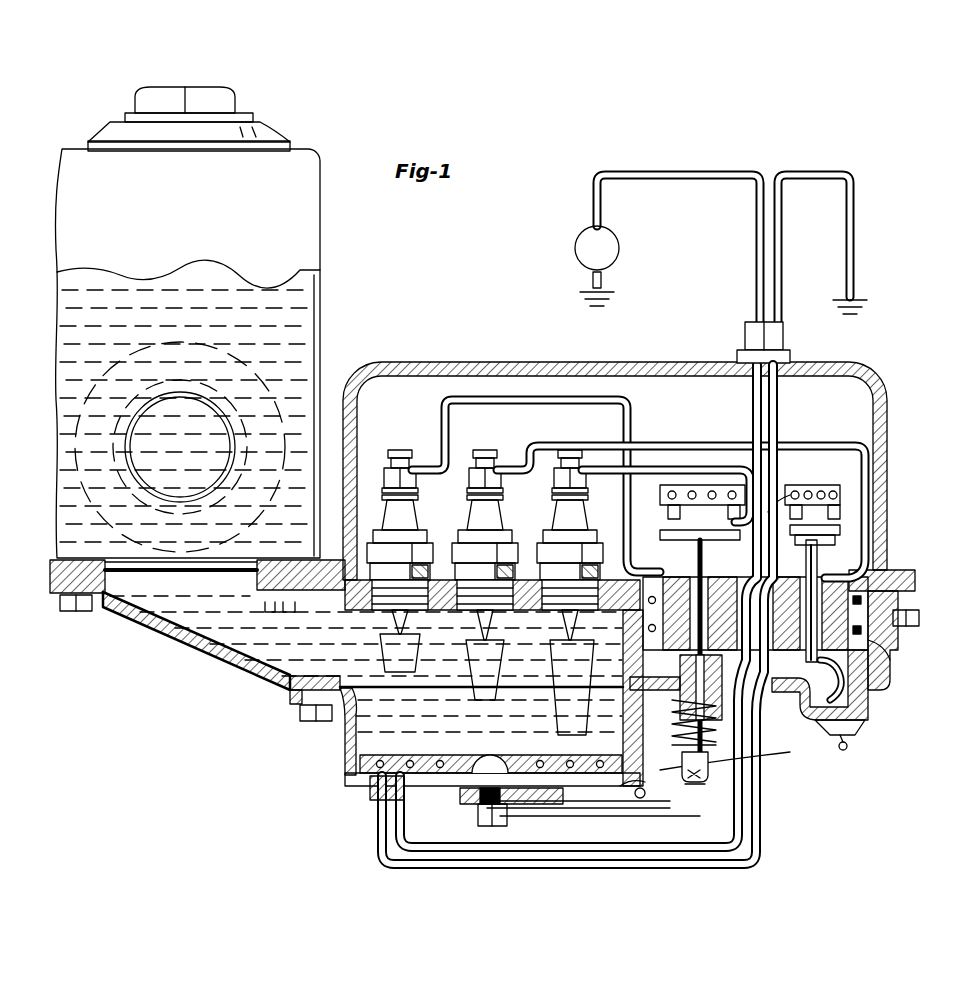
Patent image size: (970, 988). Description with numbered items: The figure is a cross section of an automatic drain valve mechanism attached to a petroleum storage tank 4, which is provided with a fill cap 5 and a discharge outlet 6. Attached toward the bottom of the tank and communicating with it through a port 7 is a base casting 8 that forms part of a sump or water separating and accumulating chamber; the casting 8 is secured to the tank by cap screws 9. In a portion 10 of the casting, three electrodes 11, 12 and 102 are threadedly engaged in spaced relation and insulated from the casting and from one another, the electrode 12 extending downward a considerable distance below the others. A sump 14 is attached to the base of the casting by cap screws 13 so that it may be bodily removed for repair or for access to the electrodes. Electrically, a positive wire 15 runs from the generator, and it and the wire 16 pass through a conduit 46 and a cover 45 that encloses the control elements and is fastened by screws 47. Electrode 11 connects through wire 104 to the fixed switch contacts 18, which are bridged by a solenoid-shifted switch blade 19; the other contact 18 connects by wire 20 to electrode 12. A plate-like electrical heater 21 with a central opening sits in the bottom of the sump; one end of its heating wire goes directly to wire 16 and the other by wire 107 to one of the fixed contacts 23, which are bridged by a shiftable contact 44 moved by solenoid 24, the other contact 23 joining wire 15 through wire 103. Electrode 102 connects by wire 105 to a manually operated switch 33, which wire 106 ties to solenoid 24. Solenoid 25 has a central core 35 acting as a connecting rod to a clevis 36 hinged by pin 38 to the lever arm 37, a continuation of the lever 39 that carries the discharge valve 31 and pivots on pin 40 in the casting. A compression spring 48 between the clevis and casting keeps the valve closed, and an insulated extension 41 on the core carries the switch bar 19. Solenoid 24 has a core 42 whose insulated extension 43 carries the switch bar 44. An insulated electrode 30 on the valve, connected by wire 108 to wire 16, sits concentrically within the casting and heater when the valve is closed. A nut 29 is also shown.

The tank 4 is at (321, 236).
The fill cap 5 is at (189, 119).
The discharge outlet 6 is at (180, 447).
The port 7 is at (238, 580).
The base casting 8 is at (195, 632).
The cap screws 9 is at (60, 603).
The portion of the casting 10 is at (445, 570).
The electrode 11 is at (380, 648).
The electrode 102 is at (466, 668).
The electrode 12 is at (558, 712).
The cap screws 13 is at (300, 713).
The sump 14 is at (345, 750).
The positive wire 15 is at (698, 185).
The wire 16 is at (856, 207).
The fixed switch contacts 18 is at (726, 518).
The switch blade 19 is at (668, 532).
The wire 20 is at (655, 468).
The electrical heater 21 is at (415, 745).
The fixed contacts 23 is at (815, 505).
The solenoid 24 is at (817, 560).
The solenoid 25 is at (704, 570).
The nut 29 is at (478, 812).
The electrode 30 is at (495, 758).
The discharge valve 31 is at (460, 795).
The manually operated switch 33 is at (858, 726).
The central core 35 is at (672, 724).
The clevis 36 is at (680, 795).
The lever arm 37 is at (736, 756).
The pin 38 is at (708, 775).
The lever 39 is at (576, 810).
The pin 40 is at (648, 796).
The insulated extension 41 is at (688, 560).
The core 42 is at (870, 653).
The insulated extension 43 is at (820, 545).
The shiftable contact 44 is at (830, 530).
The cover 45 is at (888, 404).
The conduit 46 is at (784, 338).
The screws 47 is at (919, 618).
The compression spring 48 is at (672, 747).
The wire 103 is at (775, 498).
The wire 104 is at (505, 410).
The wire 105 is at (792, 446).
The wire 106 is at (830, 672).
The wire 107 is at (763, 836).
The wire 108 is at (656, 812).